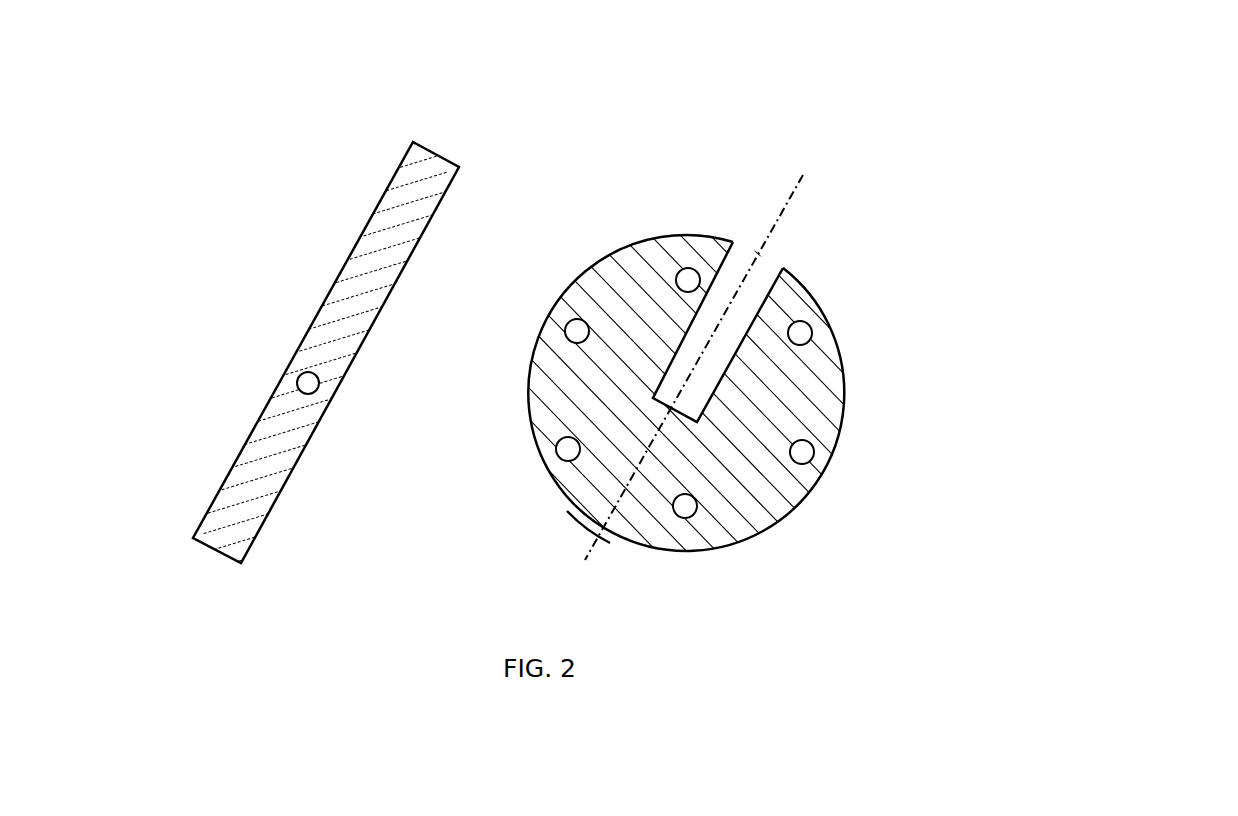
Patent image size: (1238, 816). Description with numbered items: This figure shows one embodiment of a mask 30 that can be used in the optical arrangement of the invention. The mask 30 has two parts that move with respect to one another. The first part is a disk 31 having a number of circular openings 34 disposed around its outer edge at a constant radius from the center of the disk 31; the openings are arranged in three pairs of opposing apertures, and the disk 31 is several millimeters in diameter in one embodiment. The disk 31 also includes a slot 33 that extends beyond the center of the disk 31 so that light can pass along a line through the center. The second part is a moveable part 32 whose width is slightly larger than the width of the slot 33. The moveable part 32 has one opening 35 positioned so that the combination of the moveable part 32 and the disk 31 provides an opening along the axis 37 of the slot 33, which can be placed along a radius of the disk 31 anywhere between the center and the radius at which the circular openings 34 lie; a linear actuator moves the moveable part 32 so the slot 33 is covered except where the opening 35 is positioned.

The mask 30 is at (1122, 134).
The disk 31 is at (728, 523).
The moveable part 32 is at (260, 512).
The slot 33 is at (799, 221).
The circular openings 34 is at (812, 446).
The opening 35 is at (319, 382).
The axis 37 is at (590, 542).